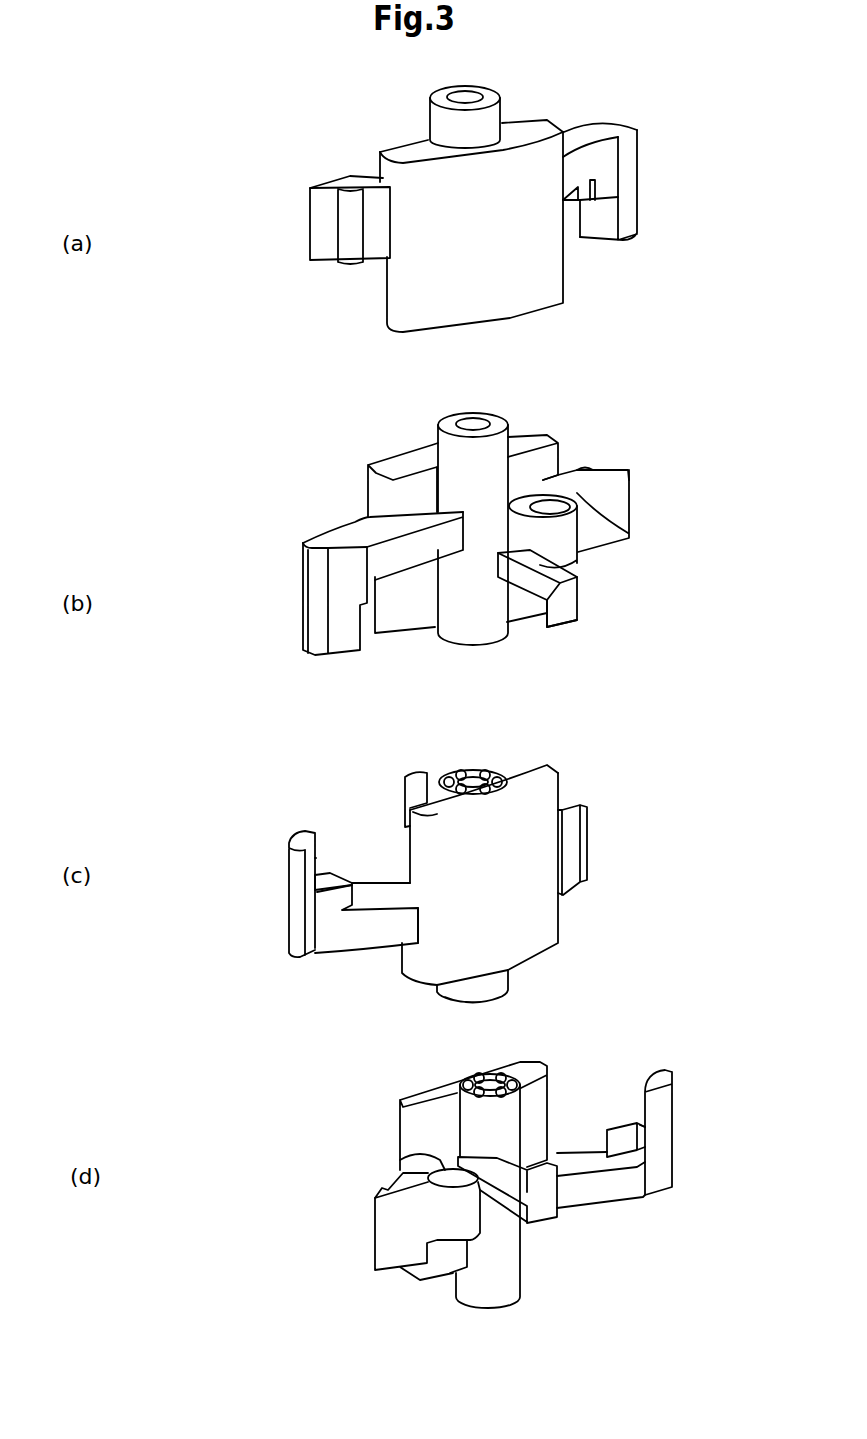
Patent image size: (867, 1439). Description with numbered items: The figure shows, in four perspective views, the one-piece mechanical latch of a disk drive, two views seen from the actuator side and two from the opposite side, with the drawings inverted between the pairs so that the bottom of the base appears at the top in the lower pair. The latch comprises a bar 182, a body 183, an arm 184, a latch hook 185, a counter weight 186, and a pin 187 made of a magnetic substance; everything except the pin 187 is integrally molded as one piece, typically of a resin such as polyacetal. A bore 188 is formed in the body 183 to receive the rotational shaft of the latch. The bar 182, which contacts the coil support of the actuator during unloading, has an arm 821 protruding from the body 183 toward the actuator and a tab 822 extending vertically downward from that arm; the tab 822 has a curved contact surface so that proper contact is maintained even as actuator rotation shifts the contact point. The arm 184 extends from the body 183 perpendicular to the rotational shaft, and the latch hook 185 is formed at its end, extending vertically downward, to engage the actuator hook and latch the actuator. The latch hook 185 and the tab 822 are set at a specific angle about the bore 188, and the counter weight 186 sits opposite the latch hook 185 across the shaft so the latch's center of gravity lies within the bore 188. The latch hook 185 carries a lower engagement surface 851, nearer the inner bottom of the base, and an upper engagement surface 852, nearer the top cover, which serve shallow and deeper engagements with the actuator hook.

The bar 182 is at (602, 916).
The body 183 is at (386, 299).
The arm 184 is at (584, 131).
The latch hook 185 is at (641, 184).
The counter weight 186 is at (310, 223).
The pin 187 is at (578, 503).
The bore 188 is at (460, 104).
The arm 821 is at (535, 590).
The tab 822 is at (568, 610).
The lower engagement surface 851 is at (603, 240).
The upper engagement surface 852 is at (575, 204).